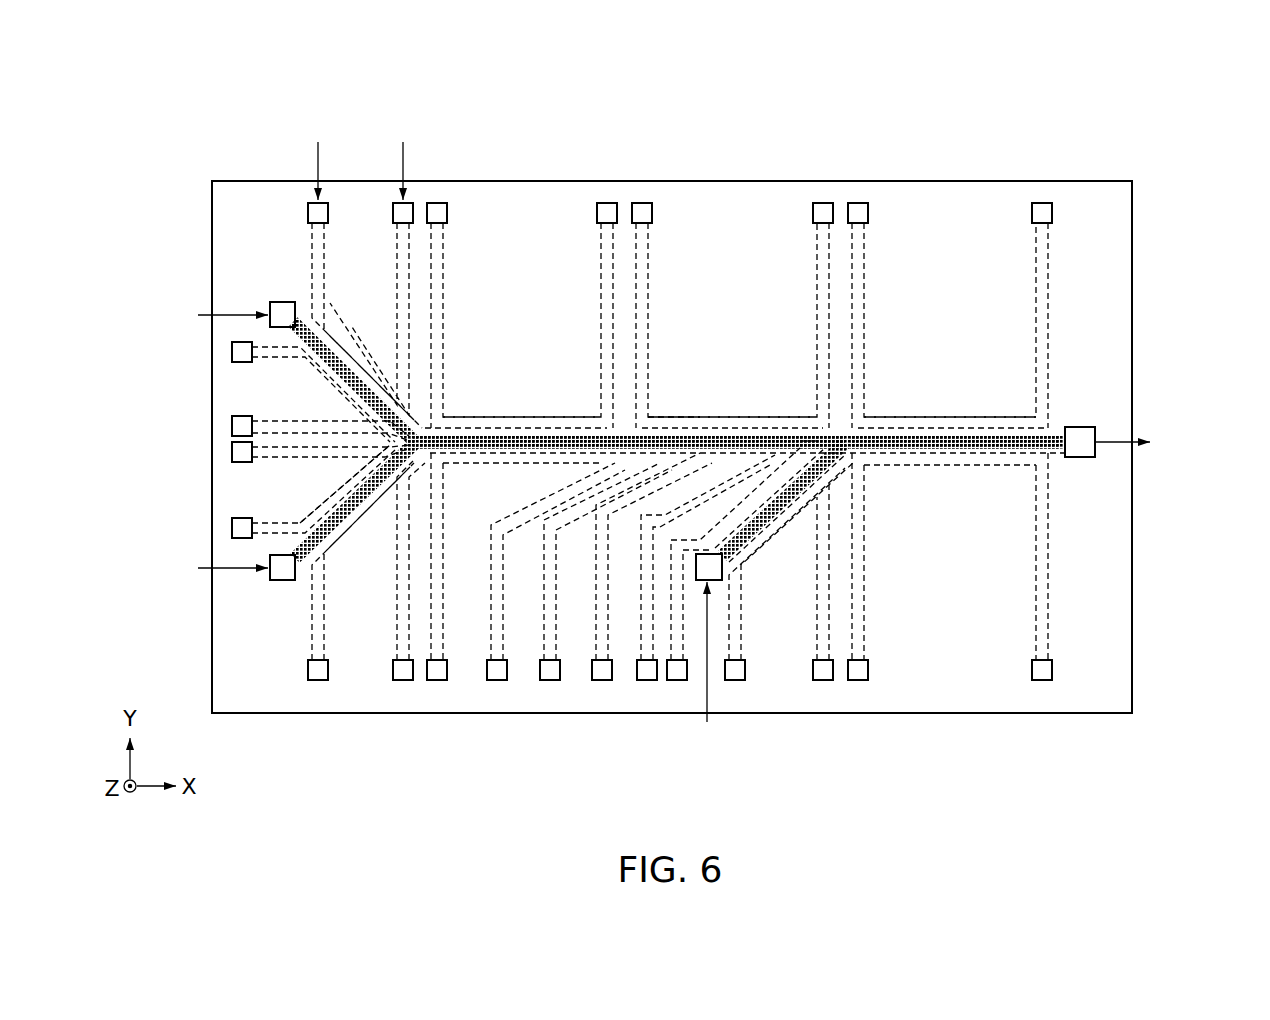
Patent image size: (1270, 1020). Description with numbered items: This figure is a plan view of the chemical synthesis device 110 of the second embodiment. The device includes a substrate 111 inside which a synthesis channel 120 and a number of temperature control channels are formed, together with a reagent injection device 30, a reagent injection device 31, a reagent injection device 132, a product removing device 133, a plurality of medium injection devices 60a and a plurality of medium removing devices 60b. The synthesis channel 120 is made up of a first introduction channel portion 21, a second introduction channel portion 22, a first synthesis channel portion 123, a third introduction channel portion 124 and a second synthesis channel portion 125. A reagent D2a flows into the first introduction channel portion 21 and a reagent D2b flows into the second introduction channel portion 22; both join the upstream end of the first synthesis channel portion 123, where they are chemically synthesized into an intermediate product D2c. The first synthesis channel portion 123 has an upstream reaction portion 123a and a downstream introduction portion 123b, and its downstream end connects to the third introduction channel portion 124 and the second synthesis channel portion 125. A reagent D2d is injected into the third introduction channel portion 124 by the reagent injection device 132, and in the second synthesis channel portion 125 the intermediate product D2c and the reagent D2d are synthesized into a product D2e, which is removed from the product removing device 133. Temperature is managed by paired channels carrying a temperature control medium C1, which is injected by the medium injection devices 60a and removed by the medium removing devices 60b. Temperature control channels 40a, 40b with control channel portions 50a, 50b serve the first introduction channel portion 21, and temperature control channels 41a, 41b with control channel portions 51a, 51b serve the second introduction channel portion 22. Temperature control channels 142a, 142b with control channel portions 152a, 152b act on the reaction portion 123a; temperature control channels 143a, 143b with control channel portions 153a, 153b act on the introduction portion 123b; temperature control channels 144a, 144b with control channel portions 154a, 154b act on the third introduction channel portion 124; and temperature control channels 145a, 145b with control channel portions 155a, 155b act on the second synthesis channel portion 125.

The chemical synthesis device 110 is at (1165, 140).
The substrate 111 is at (1118, 180).
The synthesis channel 120 is at (1003, 455).
The first synthesis channel portion 123 is at (572, 95).
The reaction portion 123a is at (523, 432).
The introduction portion 123b is at (708, 435).
The third introduction channel portion 124 is at (788, 520).
The second synthesis channel portion 125 is at (967, 437).
The first introduction channel portion 21 is at (310, 330).
The second introduction channel portion 22 is at (310, 557).
The reagent injection device 30 is at (283, 305).
The reagent injection device 31 is at (283, 578).
The reagent injection device 132 is at (713, 570).
The product removing device 133 is at (1085, 458).
The temperature control channel 40a is at (307, 247).
The temperature control channel 40b is at (277, 362).
The temperature control channel 41a is at (330, 647).
The temperature control channel 41b is at (273, 463).
The control channel portion 50a is at (357, 343).
The control channel portion 50b is at (332, 397).
The control channel portion 51a is at (357, 528).
The control channel portion 51b is at (340, 478).
The medium injection device 60a is at (317, 205).
The medium removing device 60b is at (407, 205).
The temperature control medium C1 is at (360, 159).
The temperature control channel 142a is at (445, 260).
The temperature control channel 142b is at (452, 642).
The temperature control channel 143a is at (650, 268).
The temperature control channel 143b is at (565, 642).
The temperature control channel 144a is at (665, 638).
The temperature control channel 144b is at (817, 642).
The temperature control channel 145a is at (867, 273).
The temperature control channel 145b is at (868, 646).
The control channel portion 152a is at (493, 417).
The control channel portion 152b is at (468, 466).
The control channel portion 153a is at (735, 417).
The control channel portion 153b is at (667, 420).
The control channel portion 154a is at (707, 513).
The control channel portion 154b is at (755, 560).
The control channel portion 155a is at (933, 417).
The control channel portion 155b is at (942, 468).
The reagent D2a is at (210, 315).
The reagent D2b is at (210, 568).
The intermediate product D2c is at (820, 438).
The reagent D2d is at (708, 666).
The product D2e is at (1147, 442).